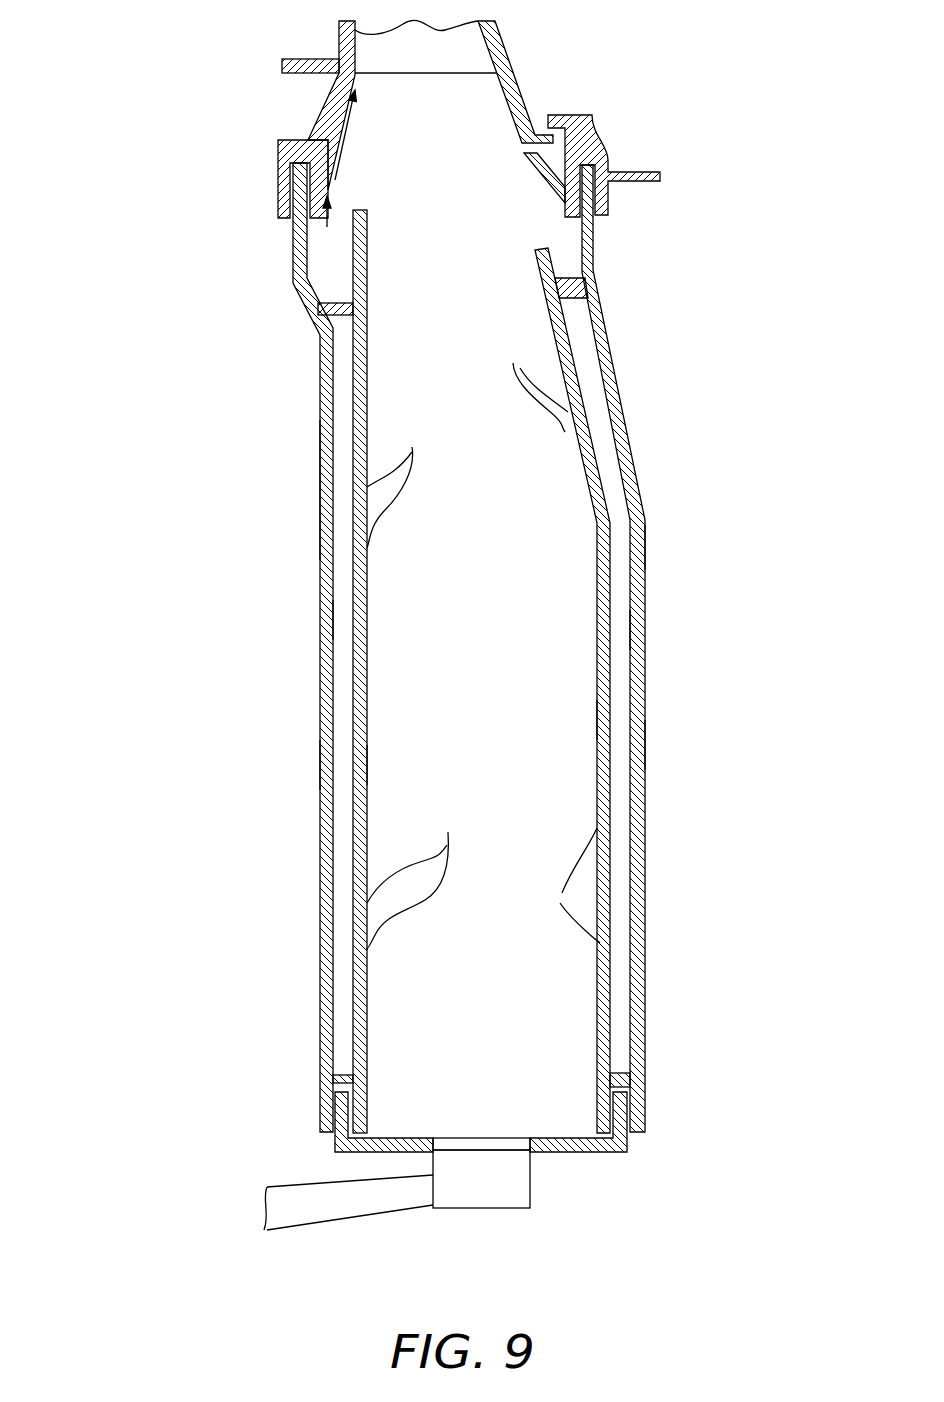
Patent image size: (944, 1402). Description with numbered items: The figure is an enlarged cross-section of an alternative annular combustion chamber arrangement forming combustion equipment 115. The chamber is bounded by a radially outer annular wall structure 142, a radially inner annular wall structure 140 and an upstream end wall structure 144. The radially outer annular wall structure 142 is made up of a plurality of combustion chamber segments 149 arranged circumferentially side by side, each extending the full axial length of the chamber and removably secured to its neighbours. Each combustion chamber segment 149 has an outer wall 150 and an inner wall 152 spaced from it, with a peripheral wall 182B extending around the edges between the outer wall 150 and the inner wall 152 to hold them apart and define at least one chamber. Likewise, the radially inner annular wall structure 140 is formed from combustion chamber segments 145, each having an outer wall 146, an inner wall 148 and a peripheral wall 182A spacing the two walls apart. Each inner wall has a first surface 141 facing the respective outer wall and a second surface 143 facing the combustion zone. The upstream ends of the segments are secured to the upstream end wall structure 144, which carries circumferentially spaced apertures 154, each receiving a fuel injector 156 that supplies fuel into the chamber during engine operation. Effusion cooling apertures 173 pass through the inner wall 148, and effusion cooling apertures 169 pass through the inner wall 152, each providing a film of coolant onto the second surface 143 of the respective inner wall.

The combustion equipment 115 is at (168, 360).
The radially inner annular wall structure 140 is at (612, 343).
The first surface 141 is at (352, 622).
The radially outer annular wall structure 142 is at (310, 362).
The second surface 143 is at (367, 640).
The upstream end wall structure 144 is at (587, 1150).
The combustion chamber segment 145 is at (653, 518).
The outer wall 146 is at (645, 740).
The inner wall 148 is at (597, 718).
The combustion chamber segment 149 is at (312, 477).
The outer wall 150 is at (320, 760).
The inner wall 152 is at (367, 763).
The aperture 154 is at (433, 1145).
The fuel injector 156 is at (490, 1195).
The effusion cooling aperture 169 is at (367, 431).
The effusion cooling aperture 173 is at (570, 366).
The peripheral wall 182A is at (548, 278).
The peripheral wall 182B is at (330, 302).